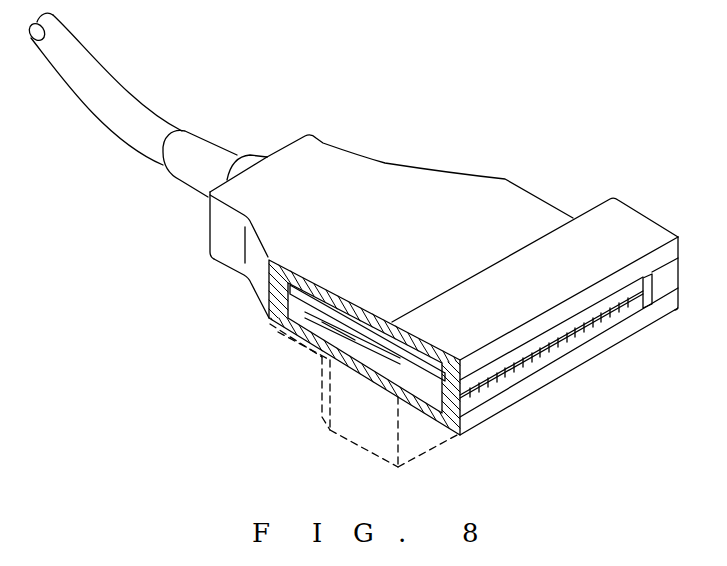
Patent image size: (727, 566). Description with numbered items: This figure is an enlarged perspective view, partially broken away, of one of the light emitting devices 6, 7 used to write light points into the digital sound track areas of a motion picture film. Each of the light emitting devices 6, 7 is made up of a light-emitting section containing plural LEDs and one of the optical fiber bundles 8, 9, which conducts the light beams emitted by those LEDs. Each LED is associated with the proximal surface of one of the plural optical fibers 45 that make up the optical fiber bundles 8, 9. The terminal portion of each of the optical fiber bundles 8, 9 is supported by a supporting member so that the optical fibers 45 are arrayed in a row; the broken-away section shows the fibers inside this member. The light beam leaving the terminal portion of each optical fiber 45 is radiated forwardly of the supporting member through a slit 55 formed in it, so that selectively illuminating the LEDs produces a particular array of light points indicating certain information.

The light emitting device 6 is at (420, 268).
The light emitting device 7 is at (460, 180).
The optical fiber bundle 8 is at (135, 89).
The optical fiber bundle 9 is at (160, 124).
The optical fiber 45 is at (342, 349).
The slit 55 is at (458, 435).